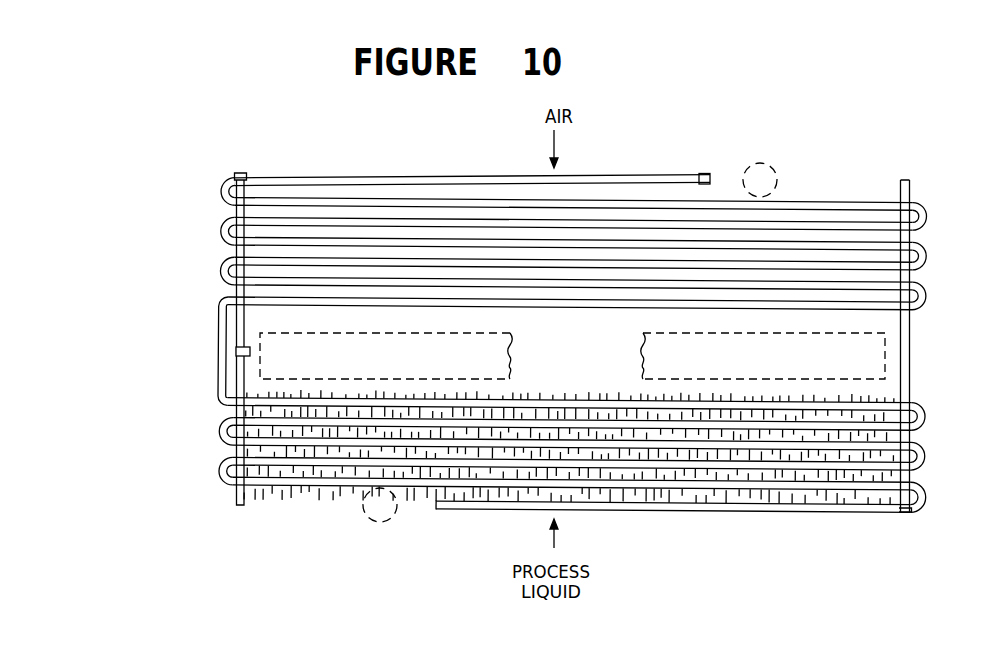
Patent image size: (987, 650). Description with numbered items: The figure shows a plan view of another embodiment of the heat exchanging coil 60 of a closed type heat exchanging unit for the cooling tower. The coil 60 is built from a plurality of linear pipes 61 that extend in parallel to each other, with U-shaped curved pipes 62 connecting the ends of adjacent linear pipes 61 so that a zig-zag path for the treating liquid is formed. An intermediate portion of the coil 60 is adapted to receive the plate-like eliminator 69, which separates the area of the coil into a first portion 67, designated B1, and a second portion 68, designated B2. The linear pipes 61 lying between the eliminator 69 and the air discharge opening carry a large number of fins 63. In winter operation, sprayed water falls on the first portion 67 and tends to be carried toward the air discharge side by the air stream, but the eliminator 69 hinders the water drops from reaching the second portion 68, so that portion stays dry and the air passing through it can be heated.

The heat exchanging coil 60 is at (622, 166).
The linear pipes 61 is at (452, 195).
The curved pipes 62 is at (919, 306).
The fins 63 is at (548, 399).
The first portion 67 is at (209, 227).
The second portion 68 is at (209, 438).
The eliminator 69 is at (258, 333).